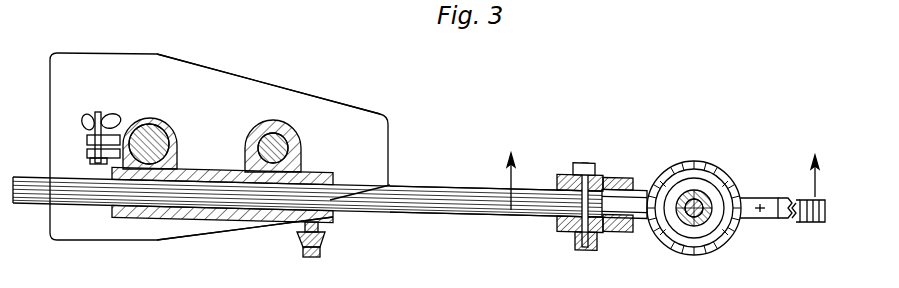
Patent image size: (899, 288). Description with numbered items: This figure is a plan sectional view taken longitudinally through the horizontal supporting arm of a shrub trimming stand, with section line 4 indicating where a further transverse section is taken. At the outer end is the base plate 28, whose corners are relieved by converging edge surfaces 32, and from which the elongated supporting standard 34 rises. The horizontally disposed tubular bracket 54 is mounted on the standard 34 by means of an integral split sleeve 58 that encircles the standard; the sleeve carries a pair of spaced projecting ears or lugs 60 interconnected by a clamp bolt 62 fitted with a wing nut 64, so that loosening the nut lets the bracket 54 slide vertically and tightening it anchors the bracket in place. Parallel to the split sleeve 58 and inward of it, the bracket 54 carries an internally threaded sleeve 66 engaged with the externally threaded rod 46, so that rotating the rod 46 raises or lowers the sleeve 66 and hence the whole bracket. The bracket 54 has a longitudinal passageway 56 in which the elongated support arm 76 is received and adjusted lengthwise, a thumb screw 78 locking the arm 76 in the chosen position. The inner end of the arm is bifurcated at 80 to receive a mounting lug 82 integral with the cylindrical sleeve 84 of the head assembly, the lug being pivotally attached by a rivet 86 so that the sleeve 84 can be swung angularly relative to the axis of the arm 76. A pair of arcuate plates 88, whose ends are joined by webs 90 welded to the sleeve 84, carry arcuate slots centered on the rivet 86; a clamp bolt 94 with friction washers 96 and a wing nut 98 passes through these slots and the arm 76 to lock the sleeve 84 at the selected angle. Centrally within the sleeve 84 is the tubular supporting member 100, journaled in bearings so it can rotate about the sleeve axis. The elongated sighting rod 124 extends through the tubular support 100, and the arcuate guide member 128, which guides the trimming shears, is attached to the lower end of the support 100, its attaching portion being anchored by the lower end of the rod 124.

The section line 4- 4 is at (654, 172).
The base plate 28 is at (76, 228).
The converging edge surfaces 32 is at (330, 100).
The supporting standard 34 is at (168, 137).
The externally threaded rod 46 is at (284, 150).
The tubular bracket 54 is at (213, 228).
The passageway 56 is at (201, 187).
The split sleeve 58 is at (150, 122).
The ears or lugs 60 is at (88, 153).
The clamp bolt 62 is at (93, 117).
The wing nut 64 is at (104, 132).
The internally threaded sleeve 66 is at (270, 124).
The support arm 76 is at (413, 205).
The thumb screw 78 is at (322, 228).
The bifurcated end portion 80 is at (612, 178).
The mounting lug 82 is at (663, 172).
The cylindrical sleeve 84 is at (703, 166).
The rivet 86 is at (632, 185).
The arcuate plates 88 is at (560, 228).
The webs 90 is at (650, 232).
The clamp bolt 94 is at (583, 163).
The friction washers 96 is at (570, 172).
The wing nut 98 is at (578, 242).
The tubular supporting member 100 is at (718, 192).
The sighting rod 124 is at (722, 238).
The arcuate guide member 128 is at (785, 198).